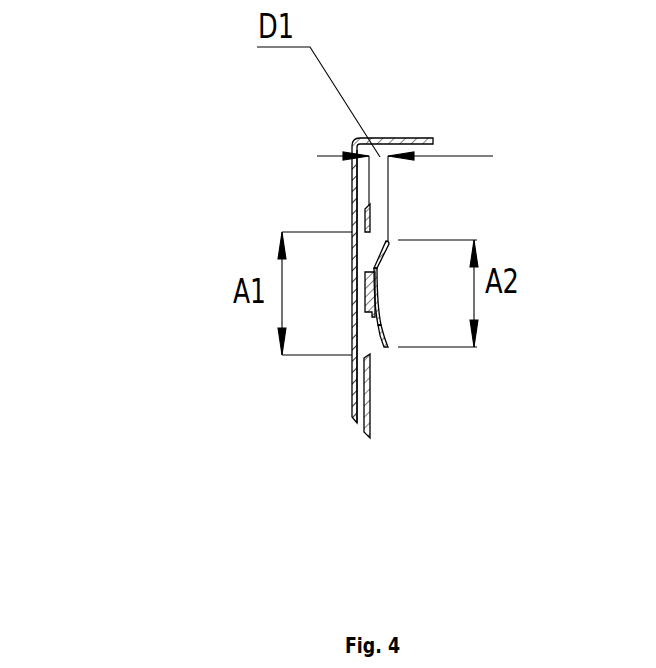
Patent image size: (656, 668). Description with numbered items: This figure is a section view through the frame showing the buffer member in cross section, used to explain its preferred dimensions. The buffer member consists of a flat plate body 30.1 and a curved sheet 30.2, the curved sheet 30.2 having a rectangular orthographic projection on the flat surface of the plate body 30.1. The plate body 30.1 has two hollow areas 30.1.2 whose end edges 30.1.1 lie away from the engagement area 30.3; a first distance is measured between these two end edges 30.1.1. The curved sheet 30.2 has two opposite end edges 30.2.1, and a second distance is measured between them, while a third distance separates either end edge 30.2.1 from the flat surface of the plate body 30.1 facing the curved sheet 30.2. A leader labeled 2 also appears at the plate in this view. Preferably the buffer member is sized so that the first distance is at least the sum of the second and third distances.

The panel 2 is at (352, 192).
The plate body 30.1 is at (194, 359).
The end edges of the hollow areas 30.1.1 is at (365, 229).
The hollow areas 30.1.2 is at (355, 352).
The curved sheet 30.2 is at (378, 285).
The end edges of the curved sheet 30.2.1 is at (388, 242).
The engagement area 30.3 is at (275, 324).